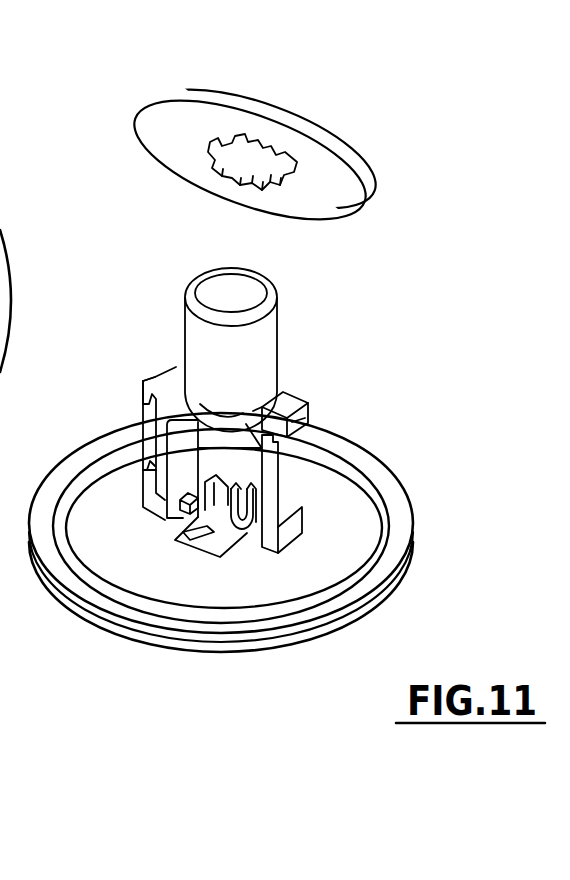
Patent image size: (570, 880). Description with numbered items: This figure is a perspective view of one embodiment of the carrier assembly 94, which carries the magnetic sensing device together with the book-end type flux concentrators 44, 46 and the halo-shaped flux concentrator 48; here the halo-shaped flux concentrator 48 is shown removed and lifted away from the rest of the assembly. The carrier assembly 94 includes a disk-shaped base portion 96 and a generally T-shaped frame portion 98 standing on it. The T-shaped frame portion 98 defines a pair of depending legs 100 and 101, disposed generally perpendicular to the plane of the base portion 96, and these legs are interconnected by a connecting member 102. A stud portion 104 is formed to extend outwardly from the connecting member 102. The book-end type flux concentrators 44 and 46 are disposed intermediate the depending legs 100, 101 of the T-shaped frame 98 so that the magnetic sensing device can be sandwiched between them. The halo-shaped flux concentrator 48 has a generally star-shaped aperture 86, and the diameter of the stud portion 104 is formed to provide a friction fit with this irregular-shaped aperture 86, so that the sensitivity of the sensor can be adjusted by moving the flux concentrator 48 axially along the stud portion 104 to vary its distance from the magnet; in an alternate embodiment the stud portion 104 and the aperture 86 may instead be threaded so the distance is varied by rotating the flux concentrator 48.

The flux concentrator 44 is at (252, 530).
The flux concentrator 46 is at (183, 503).
The halo-shaped flux concentrator 48 is at (366, 163).
The star-shaped aperture 86 is at (233, 157).
The carrier assembly 94 is at (512, 167).
The base portion 96 is at (0, 229).
The T-shaped frame portion 98 is at (271, 446).
The depending leg 100 is at (262, 470).
The depending leg 101 is at (160, 435).
The connecting member 102 is at (163, 391).
The stud portion 104 is at (253, 343).